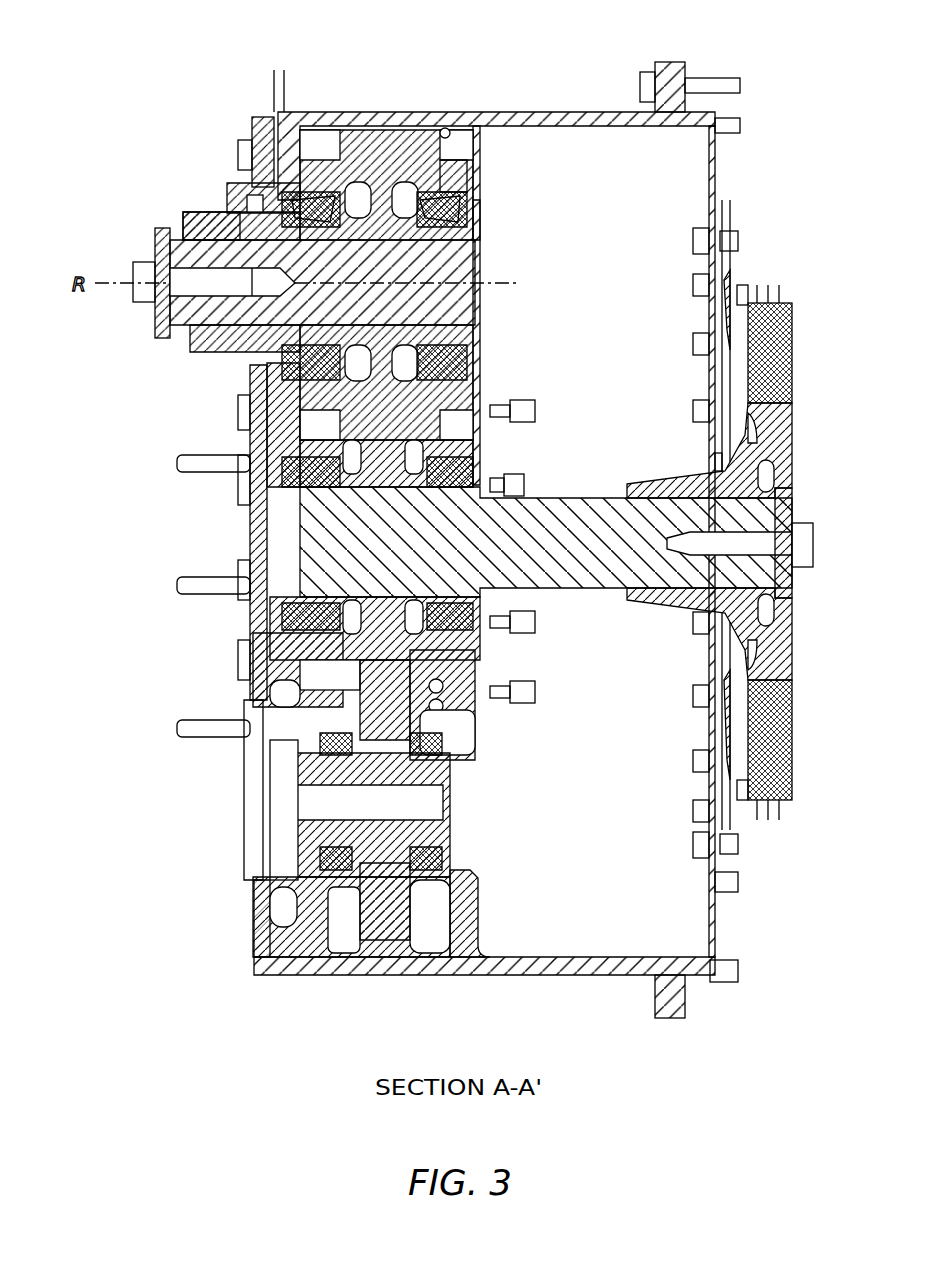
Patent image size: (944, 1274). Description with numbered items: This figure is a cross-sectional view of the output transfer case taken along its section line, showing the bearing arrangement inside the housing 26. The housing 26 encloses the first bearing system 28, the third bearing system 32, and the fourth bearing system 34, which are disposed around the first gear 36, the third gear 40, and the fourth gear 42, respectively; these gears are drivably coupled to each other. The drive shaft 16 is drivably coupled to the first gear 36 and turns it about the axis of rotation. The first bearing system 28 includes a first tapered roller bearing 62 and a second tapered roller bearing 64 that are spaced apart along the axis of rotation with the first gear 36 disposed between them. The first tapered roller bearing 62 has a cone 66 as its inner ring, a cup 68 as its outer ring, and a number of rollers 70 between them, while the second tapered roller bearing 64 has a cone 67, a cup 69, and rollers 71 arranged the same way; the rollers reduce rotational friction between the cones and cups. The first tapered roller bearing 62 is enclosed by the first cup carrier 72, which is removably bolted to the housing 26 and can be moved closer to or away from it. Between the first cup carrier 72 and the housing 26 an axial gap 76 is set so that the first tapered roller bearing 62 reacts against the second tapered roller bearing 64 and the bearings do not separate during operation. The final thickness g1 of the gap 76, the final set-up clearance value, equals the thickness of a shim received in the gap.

The housing 26 is at (565, 112).
The gap 76 is at (266, 112).
The final thickness of the gap g1 is at (305, 83).
The drive shaft 16 is at (198, 345).
The first cup carrier 72 is at (298, 196).
The rollers 70 is at (310, 212).
The first tapered roller bearing 62 is at (270, 208).
The first gear 36 is at (378, 242).
The cone 66 is at (338, 196).
The cup 68 is at (310, 192).
The cone 67 is at (425, 195).
The rollers 71 is at (440, 200).
The cup 69 is at (455, 200).
The second tapered roller bearing 64 is at (482, 221).
The first bearing system 28 is at (213, 368).
The fourth gear 42 is at (380, 532).
The fourth bearing system 34 is at (497, 650).
The third bearing system 32 is at (228, 687).
The third gear 40 is at (380, 835).